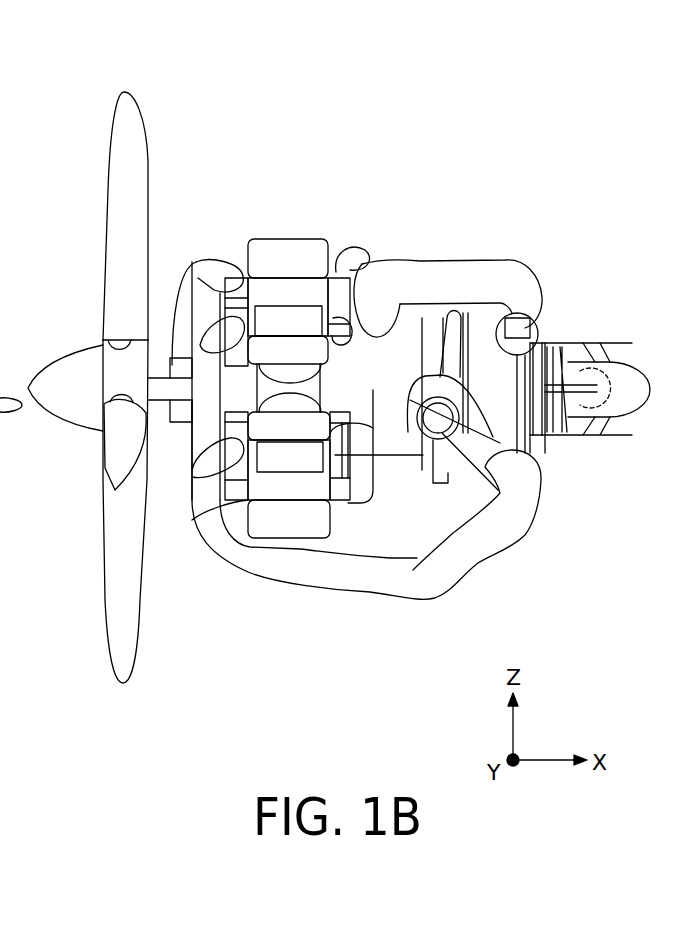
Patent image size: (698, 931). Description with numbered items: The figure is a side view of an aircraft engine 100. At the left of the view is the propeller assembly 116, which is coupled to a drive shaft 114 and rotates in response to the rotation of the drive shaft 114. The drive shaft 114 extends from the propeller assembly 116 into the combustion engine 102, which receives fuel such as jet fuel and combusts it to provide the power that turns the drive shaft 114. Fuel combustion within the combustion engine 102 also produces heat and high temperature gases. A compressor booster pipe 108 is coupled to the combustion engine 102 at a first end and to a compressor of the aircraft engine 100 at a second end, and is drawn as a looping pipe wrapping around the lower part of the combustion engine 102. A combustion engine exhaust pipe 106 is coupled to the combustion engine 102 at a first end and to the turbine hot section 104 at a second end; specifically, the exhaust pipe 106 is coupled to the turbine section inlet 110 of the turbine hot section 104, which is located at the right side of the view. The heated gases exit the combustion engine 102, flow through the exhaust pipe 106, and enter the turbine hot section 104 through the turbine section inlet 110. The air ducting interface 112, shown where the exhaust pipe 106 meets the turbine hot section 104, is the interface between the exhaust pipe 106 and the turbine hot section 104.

The aircraft engine 100 is at (580, 206).
The combustion engine 102 is at (302, 525).
The turbine hot section 104 is at (557, 443).
The combustion engine exhaust pipe 106 is at (417, 268).
The compressor booster pipe 108 is at (225, 552).
The turbine section inlet 110 is at (548, 332).
The air ducting interface 112 is at (510, 280).
The drive shaft 114 is at (192, 262).
The propeller assembly 116 is at (139, 97).